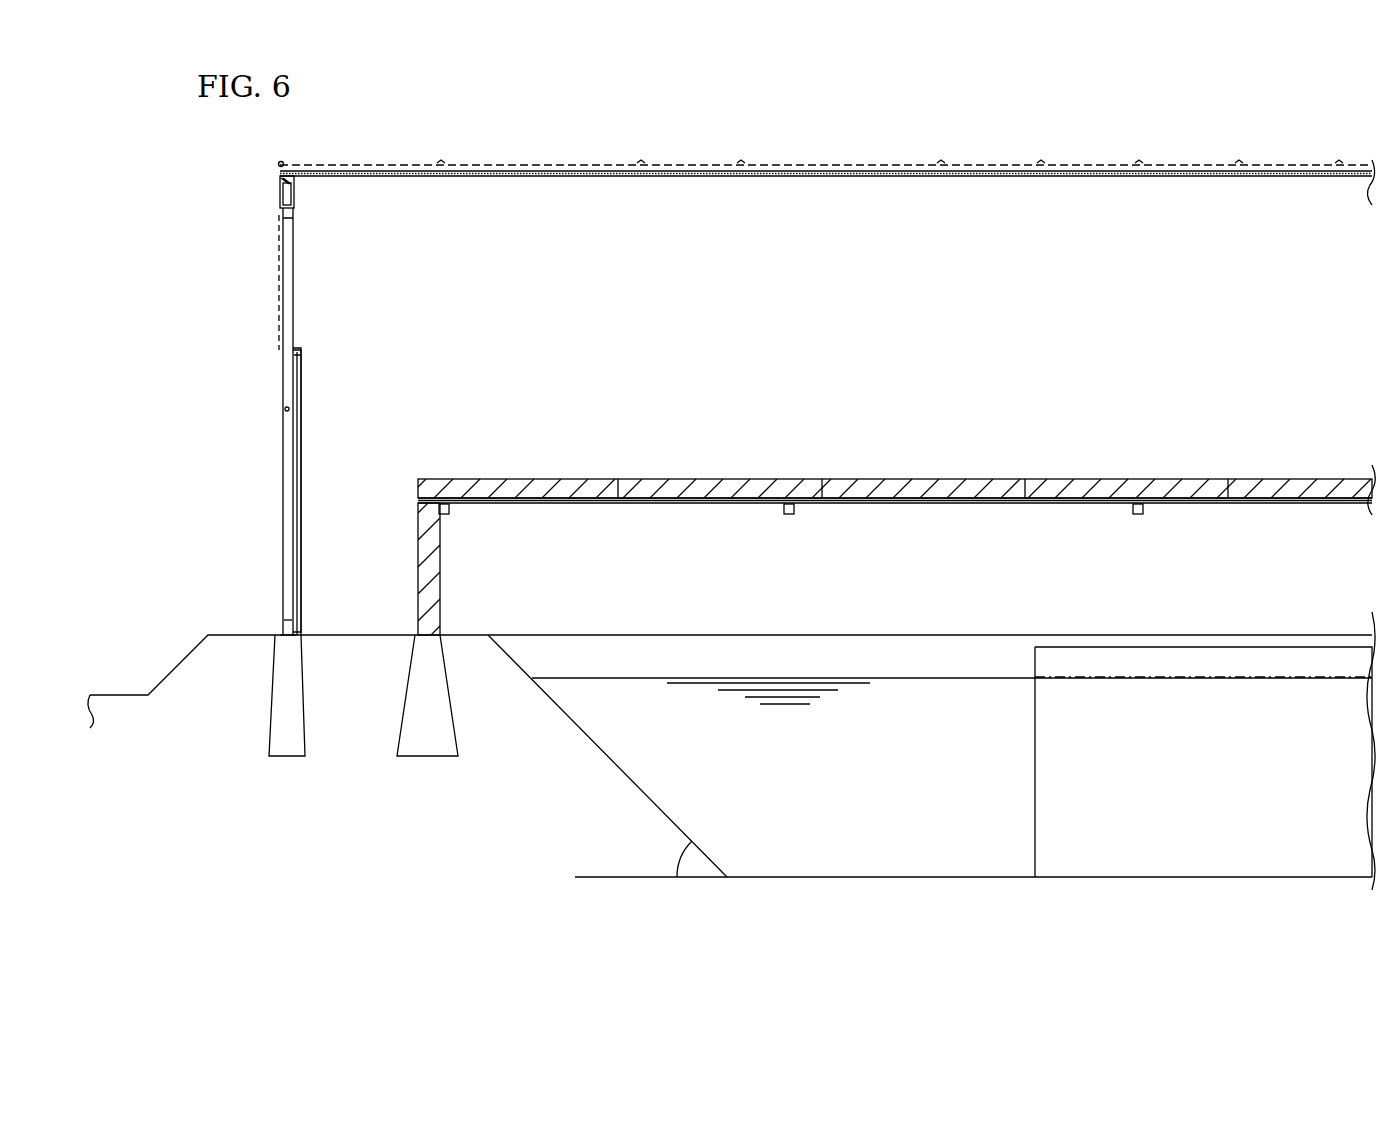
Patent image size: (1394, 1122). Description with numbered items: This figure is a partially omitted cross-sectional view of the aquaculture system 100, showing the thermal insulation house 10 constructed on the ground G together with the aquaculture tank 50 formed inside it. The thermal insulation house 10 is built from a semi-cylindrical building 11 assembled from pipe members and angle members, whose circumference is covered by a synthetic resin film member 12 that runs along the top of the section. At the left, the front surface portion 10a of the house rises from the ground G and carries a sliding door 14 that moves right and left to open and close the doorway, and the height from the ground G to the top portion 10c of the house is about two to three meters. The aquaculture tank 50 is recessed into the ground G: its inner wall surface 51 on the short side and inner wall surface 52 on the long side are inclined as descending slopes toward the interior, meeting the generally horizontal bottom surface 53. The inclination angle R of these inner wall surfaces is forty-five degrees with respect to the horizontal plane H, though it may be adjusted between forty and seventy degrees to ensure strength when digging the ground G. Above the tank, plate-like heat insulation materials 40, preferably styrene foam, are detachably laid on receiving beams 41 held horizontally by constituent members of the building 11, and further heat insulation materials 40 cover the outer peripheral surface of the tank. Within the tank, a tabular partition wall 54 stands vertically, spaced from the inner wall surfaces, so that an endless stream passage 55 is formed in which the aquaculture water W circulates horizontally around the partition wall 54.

The aquaculture system 100 is at (794, 135).
The thermal insulation house 10 is at (675, 160).
The front surface portion 10a is at (282, 380).
The top portion 10c is at (438, 163).
The building 11 is at (798, 178).
The synthetic resin film member 12 is at (985, 160).
The sliding door 14 is at (303, 413).
The heat insulation material 40 is at (540, 490).
The receiving beam 41 is at (444, 514).
The aquaculture tank 50 is at (931, 736).
The inner wall surface 51 is at (640, 785).
The inner wall surface 52 is at (942, 655).
The bottom surface 53 is at (800, 875).
The partition wall 54 is at (1228, 645).
The endless stream passage 55 is at (872, 771).
The aquaculture water W is at (772, 680).
The ground G is at (238, 633).
The horizontal plane H is at (585, 877).
The inclination angle R is at (680, 860).